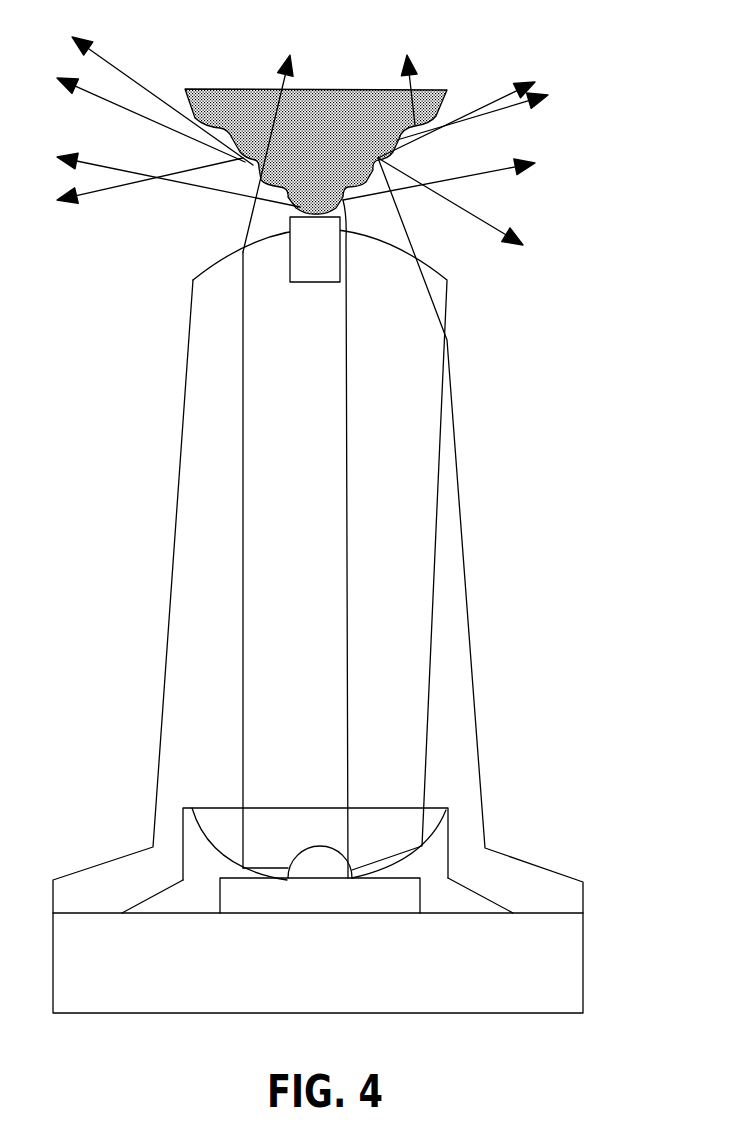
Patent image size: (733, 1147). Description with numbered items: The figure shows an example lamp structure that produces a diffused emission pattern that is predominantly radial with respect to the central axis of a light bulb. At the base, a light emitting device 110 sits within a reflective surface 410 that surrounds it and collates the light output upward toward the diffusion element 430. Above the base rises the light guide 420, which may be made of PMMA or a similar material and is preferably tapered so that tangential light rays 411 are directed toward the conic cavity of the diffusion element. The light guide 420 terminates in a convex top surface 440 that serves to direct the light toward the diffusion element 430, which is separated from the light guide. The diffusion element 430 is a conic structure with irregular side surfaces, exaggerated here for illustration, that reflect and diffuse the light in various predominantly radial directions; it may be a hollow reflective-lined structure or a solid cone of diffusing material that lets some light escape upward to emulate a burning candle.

The light emitting device 110 is at (320, 846).
The reflective surface 410 is at (437, 833).
The tangential light rays 411 is at (433, 592).
The light guide 420 is at (458, 478).
The diffusion element 430 is at (323, 103).
The convex top surface 440 is at (318, 230).